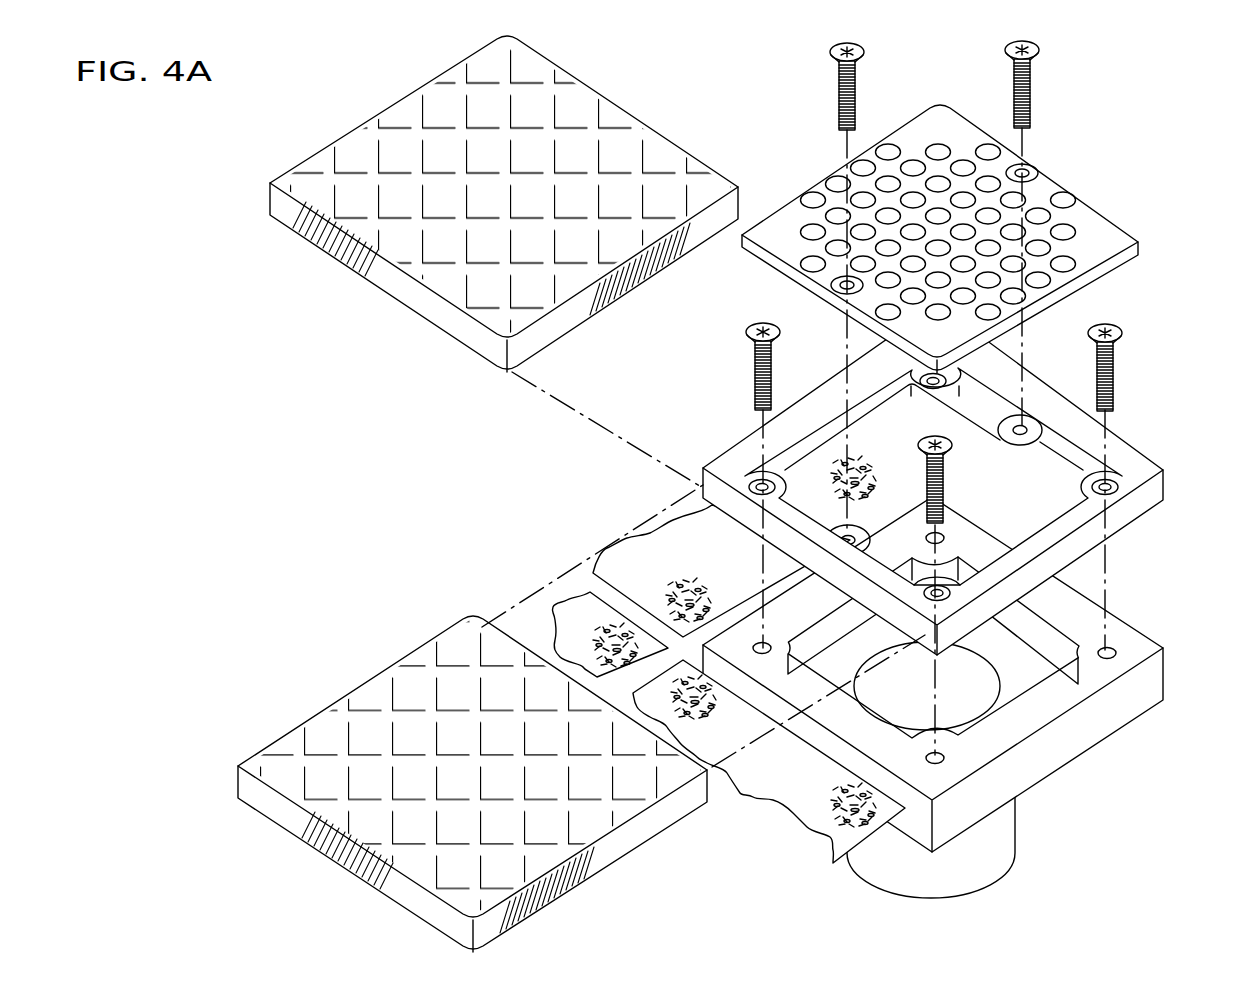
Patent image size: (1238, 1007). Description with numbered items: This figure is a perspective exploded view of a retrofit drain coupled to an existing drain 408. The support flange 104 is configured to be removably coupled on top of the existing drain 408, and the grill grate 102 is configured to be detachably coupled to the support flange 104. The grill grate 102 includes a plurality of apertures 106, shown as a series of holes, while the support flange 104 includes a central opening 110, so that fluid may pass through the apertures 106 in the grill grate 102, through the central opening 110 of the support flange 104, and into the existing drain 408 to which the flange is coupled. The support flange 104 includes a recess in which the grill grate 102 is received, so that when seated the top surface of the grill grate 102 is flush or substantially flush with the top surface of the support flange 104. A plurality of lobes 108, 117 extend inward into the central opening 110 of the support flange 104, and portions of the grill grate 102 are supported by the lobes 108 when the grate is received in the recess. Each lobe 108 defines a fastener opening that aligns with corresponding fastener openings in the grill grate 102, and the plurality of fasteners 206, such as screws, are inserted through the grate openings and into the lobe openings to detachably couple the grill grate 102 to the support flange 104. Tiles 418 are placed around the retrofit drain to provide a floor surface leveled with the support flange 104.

The tiles 418 is at (381, 97).
The fasteners 206 is at (833, 50).
The grill grate 102 is at (1123, 202).
The apertures 106 is at (812, 264).
The support flange 104 is at (924, 479).
The lobes 108 is at (712, 503).
The lobe 117 is at (1117, 479).
The central opening 110 is at (1039, 530).
The existing drain 408 is at (1046, 720).